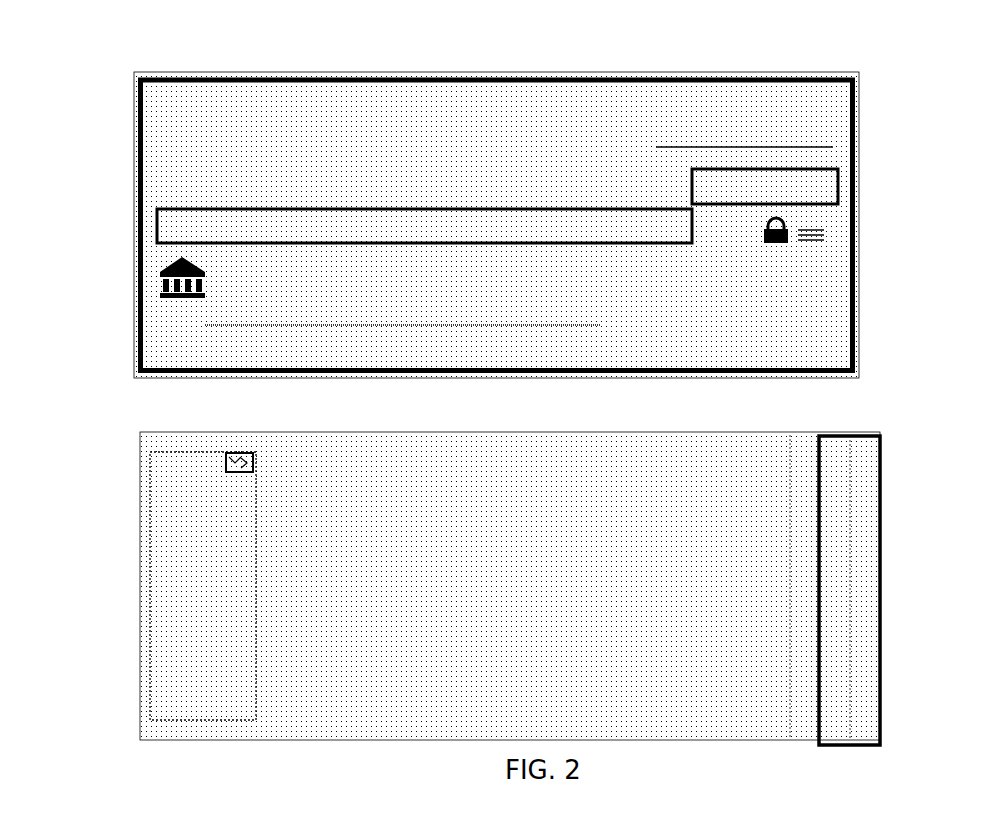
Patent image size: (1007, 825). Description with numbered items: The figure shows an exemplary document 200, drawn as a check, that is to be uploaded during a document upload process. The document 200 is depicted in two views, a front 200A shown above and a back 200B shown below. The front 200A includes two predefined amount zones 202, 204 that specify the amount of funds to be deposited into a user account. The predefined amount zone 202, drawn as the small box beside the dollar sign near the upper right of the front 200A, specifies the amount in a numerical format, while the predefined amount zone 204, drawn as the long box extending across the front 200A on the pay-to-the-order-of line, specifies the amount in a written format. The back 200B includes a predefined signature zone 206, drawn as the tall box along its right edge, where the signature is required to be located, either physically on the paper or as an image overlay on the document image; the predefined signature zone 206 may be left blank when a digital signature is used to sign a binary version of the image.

The document 200 is at (56, 45).
The front 200A is at (160, 62).
The back 200B is at (138, 426).
The predefined amount zone 202 is at (838, 190).
The predefined amount zone 204 is at (157, 226).
The predefined signature zone 206 is at (880, 465).